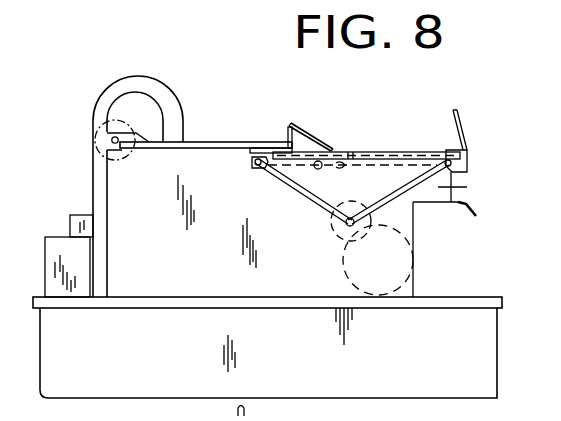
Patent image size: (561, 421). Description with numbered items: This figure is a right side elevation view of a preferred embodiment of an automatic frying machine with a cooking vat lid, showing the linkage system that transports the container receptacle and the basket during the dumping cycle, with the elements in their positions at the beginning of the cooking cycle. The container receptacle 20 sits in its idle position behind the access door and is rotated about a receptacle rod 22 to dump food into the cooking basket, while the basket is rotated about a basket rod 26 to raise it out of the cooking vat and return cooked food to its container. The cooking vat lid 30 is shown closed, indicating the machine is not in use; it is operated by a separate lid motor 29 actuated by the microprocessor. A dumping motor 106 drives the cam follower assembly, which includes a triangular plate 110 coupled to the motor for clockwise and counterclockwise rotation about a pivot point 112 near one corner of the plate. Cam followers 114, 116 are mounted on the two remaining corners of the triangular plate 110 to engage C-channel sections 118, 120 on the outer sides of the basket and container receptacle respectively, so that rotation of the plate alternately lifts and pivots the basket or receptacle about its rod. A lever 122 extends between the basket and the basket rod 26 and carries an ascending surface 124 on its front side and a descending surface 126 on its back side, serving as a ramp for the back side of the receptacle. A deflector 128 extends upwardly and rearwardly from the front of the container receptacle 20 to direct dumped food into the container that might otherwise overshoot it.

The container receptacle 20 is at (478, 213).
The receptacle rod 22 is at (318, 170).
The basket rod 26 is at (344, 170).
The lid motor 29 is at (130, 153).
The cooking vat lid 30 is at (197, 142).
The dumping motor 106 is at (405, 259).
The triangular plate 110 is at (322, 210).
The pivot point 112 is at (346, 231).
The cam follower 114 is at (257, 158).
The cam follower 116 is at (468, 161).
The C-channel section 118 is at (331, 152).
The C-channel section 120 is at (393, 152).
The lever 122 is at (291, 126).
The ascending surface 124 is at (306, 134).
The descending surface 126 is at (301, 150).
The deflector 128 is at (462, 130).